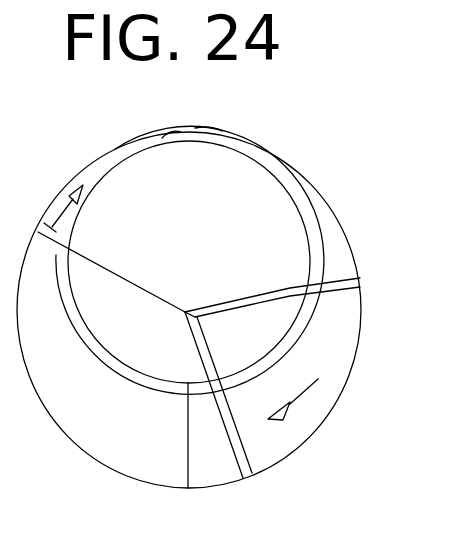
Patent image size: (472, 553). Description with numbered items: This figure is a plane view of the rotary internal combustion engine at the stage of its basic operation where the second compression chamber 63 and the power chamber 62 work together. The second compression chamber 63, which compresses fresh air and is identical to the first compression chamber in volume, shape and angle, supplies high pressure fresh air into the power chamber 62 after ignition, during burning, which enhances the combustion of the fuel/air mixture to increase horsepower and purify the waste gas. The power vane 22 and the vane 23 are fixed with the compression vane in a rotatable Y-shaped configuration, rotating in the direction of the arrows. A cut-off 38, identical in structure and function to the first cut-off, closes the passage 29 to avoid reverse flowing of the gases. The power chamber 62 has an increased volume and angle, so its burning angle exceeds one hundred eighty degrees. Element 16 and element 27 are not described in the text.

The vertical guide line 16 is at (166, 365).
The power vane 22 is at (245, 462).
The vane 23 is at (98, 263).
The slot 27 is at (335, 290).
The passage 29 is at (168, 135).
The cut-off 38 is at (103, 362).
The power chamber 62 is at (318, 407).
The second compression chamber 63 is at (52, 227).